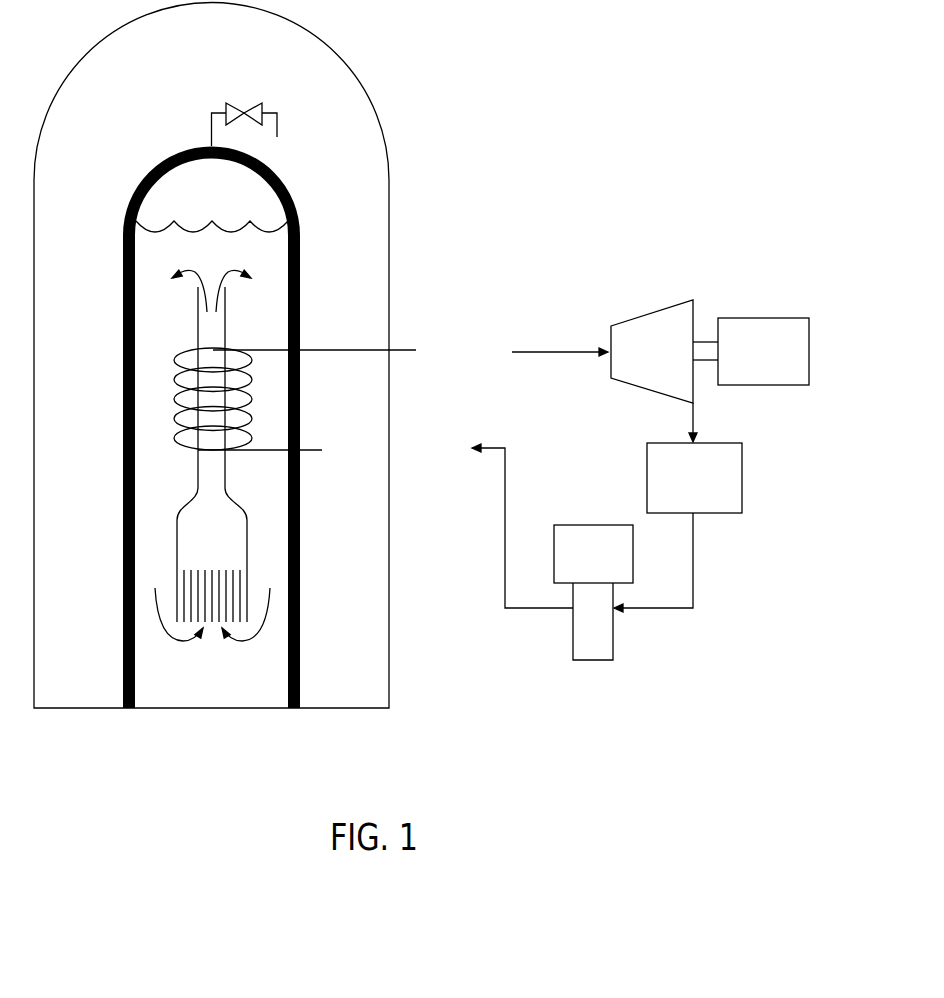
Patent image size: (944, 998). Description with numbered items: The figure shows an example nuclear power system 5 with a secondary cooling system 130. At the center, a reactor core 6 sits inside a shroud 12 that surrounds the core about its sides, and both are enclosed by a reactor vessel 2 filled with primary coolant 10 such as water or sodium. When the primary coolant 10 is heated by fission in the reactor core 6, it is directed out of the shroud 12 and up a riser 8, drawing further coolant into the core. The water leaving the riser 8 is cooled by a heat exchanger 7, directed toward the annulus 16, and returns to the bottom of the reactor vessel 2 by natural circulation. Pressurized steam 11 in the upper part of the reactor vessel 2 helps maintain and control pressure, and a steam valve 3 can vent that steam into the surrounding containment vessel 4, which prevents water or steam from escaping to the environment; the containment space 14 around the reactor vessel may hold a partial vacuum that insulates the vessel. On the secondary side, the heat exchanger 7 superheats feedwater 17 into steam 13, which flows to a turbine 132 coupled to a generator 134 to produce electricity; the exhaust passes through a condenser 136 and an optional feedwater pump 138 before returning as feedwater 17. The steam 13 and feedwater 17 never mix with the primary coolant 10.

The reactor vessel 2 is at (290, 180).
The steam valve 3 is at (250, 102).
The containment vessel 4 is at (395, 158).
The nuclear power system 5 is at (530, 92).
The reactor core 6 is at (170, 578).
The heat exchanger 7 is at (160, 392).
The riser 8 is at (232, 322).
The primary coolant 10 is at (224, 687).
The pressurized steam 11 is at (225, 207).
The shroud 12 is at (257, 542).
The steam 13 is at (458, 335).
The containment interior space 14 is at (165, 83).
The annulus 16 is at (240, 493).
The feedwater 17 is at (455, 433).
The secondary cooling system 130 is at (641, 281).
The turbine 132 is at (670, 363).
The generator 134 is at (782, 363).
The condenser 136 is at (712, 494).
The feedwater pump 138 is at (612, 559).